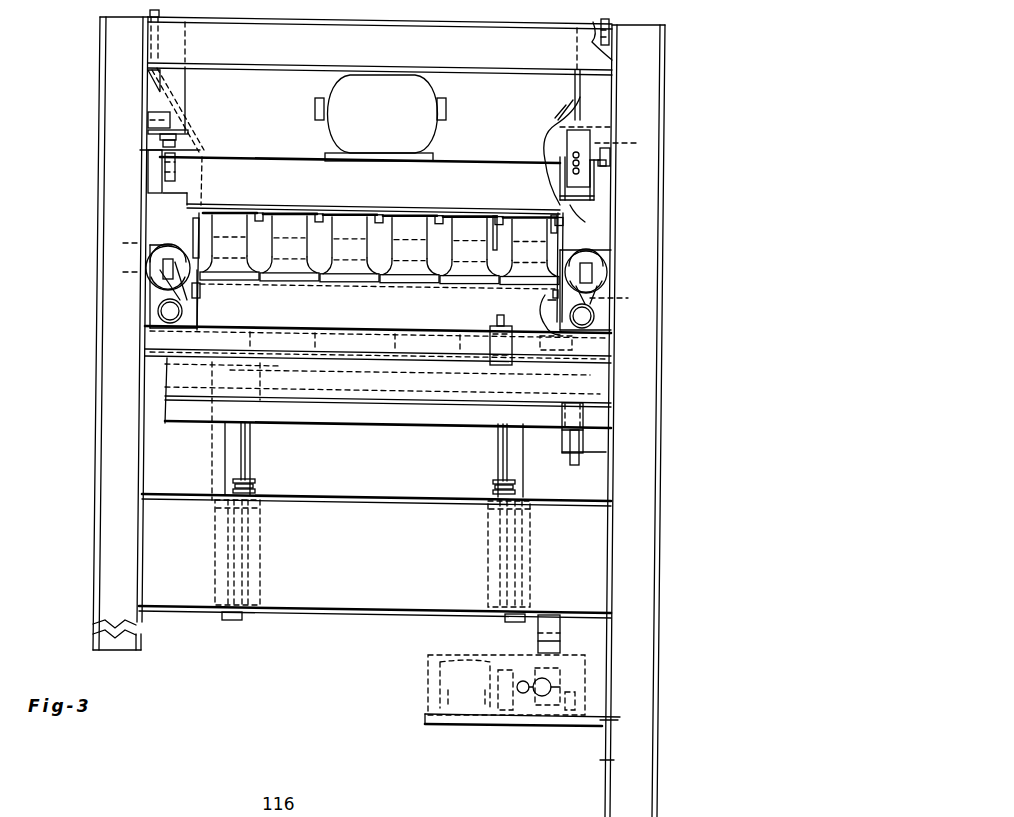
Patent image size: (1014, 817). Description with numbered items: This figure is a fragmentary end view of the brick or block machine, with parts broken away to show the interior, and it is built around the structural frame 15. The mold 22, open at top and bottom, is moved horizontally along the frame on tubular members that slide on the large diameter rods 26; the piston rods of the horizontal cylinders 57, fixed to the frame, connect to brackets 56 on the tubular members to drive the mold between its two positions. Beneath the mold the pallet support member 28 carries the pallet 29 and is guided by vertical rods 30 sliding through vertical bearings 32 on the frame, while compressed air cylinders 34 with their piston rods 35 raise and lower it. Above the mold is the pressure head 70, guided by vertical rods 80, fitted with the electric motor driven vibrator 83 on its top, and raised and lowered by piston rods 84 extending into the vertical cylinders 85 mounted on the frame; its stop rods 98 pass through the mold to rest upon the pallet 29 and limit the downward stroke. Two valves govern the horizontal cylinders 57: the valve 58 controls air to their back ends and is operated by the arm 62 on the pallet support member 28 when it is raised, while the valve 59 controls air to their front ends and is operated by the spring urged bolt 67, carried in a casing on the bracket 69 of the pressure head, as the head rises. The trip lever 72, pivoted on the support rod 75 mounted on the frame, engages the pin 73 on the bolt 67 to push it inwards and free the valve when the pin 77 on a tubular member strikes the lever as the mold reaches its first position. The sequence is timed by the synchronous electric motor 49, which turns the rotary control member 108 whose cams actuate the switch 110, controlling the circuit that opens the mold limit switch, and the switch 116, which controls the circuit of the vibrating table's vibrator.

The structural frame 15 is at (668, 337).
The mold 22 is at (340, 338).
The large diameter rods 26 is at (168, 311).
The pallet support member 28 is at (382, 430).
The pallet 29 is at (274, 350).
The vertical rods 30 is at (224, 447).
The vertical bearings 32 is at (256, 560).
The cylinders 34 is at (264, 546).
The piston rods 35 is at (252, 455).
The electric motor 49 is at (468, 660).
The brackets 56 is at (184, 300).
The horizontal cylinders 57 is at (172, 250).
The valve 58 is at (562, 445).
The valve 59 is at (584, 142).
The arm 62 is at (575, 465).
The bolt 67 is at (596, 198).
The bracket 69 is at (597, 184).
The pressure head 70 is at (470, 152).
The trip lever 72 is at (556, 312).
The pin 73 is at (589, 215).
The support rod 75 is at (611, 157).
The pin 77 is at (548, 340).
The vertical rods 80 is at (160, 13).
The electric motor driven vibrator 83 is at (418, 98).
The piston rods 84 is at (200, 163).
The vertical cylinders 85 is at (178, 92).
The stop rods 98 is at (201, 292).
The rotary control member 108 is at (550, 708).
The switch 110 is at (552, 623).
The switch 116 is at (540, 648).